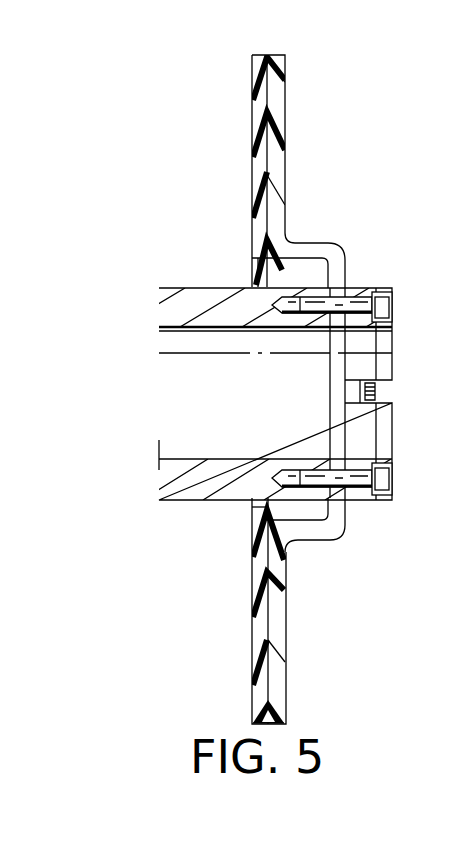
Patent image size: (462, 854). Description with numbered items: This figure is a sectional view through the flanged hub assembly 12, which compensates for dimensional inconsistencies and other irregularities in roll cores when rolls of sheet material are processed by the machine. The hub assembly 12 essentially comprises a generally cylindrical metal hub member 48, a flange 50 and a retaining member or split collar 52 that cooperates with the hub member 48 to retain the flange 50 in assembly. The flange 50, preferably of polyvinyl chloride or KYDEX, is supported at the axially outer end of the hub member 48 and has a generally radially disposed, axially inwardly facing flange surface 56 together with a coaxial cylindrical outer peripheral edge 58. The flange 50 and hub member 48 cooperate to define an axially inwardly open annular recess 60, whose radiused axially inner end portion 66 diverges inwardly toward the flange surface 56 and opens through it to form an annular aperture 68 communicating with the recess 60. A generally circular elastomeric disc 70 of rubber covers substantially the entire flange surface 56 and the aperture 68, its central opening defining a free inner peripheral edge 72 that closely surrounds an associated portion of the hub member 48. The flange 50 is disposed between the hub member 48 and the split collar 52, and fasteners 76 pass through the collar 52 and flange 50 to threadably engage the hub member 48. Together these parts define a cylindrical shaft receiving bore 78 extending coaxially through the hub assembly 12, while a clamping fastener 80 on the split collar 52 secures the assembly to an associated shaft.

The hub assembly 12 is at (351, 97).
The hub member 48 is at (200, 286).
The flange 50 is at (287, 618).
The split collar 52 is at (372, 287).
The flange surface 56 is at (257, 622).
The outer peripheral edge 58 is at (285, 724).
The annular recess 60 is at (305, 262).
The axially inner end portion of the recess 66 is at (268, 527).
The annular aperture 68 is at (262, 258).
The elastomeric disc 70 is at (250, 94).
The inner peripheral edge 72 is at (238, 502).
The fasteners 76 is at (392, 310).
The shaft receiving bore 78 is at (160, 458).
The clamping fastener 80 is at (392, 392).